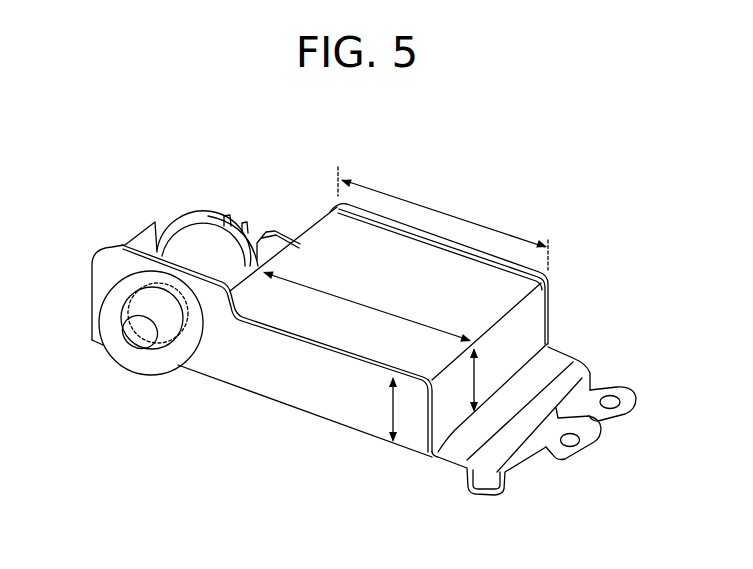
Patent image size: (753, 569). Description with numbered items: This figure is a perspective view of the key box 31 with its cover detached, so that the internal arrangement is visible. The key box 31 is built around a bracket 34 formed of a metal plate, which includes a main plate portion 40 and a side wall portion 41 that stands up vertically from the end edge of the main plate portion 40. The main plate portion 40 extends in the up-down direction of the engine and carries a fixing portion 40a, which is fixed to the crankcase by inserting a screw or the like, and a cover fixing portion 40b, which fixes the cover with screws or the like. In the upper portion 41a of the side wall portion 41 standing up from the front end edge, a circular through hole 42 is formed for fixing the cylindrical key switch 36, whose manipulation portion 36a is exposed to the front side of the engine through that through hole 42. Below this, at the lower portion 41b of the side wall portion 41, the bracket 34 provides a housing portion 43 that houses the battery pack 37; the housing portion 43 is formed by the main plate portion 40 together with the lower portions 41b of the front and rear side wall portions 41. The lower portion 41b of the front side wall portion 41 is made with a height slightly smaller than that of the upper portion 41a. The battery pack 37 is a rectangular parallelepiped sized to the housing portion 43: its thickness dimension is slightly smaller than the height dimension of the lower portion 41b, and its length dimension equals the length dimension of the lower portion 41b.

The key box 31 is at (524, 158).
The bracket 34 is at (557, 357).
The key switch 36 is at (182, 252).
The manipulation portion 36a is at (131, 333).
The battery pack 37 is at (324, 243).
The main plate portion 40 is at (454, 441).
The fixing portion 40a is at (626, 398).
The cover fixing portion 40b is at (586, 444).
The side wall portion 41 is at (387, 213).
The upper portion 41a is at (100, 273).
The lower portion 41b is at (496, 252).
The through hole 42 is at (188, 343).
The housing portion 43 is at (440, 265).